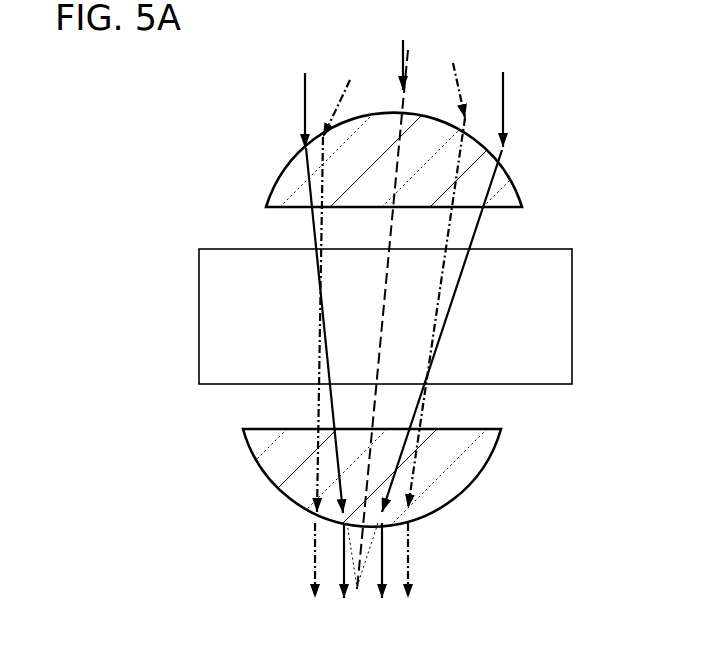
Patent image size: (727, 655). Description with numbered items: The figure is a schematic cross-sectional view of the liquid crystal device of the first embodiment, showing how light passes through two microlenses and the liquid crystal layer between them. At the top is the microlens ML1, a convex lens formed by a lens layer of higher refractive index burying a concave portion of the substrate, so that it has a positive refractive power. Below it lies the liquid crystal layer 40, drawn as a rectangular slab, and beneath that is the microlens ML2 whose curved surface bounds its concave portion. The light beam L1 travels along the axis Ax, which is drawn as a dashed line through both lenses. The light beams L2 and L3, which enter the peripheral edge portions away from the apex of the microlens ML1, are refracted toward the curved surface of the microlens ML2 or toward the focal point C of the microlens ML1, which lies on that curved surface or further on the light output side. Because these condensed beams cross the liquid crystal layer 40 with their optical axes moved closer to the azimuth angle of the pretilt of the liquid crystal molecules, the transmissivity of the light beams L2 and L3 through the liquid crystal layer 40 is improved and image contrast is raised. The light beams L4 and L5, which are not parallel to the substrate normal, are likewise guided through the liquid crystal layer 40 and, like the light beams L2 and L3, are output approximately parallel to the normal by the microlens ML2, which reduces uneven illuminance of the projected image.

The microlens ML1 is at (510, 188).
The microlens ML2 is at (480, 449).
The liquid crystal layer 40 is at (562, 318).
The optical axis Ax is at (405, 95).
The light ray L1 (axial) L1 is at (403, 62).
The light beam L2 is at (306, 98).
The light beam L3 is at (505, 99).
The light beam L4 is at (330, 97).
The light beam L5 is at (458, 92).
The focal point C is at (358, 590).